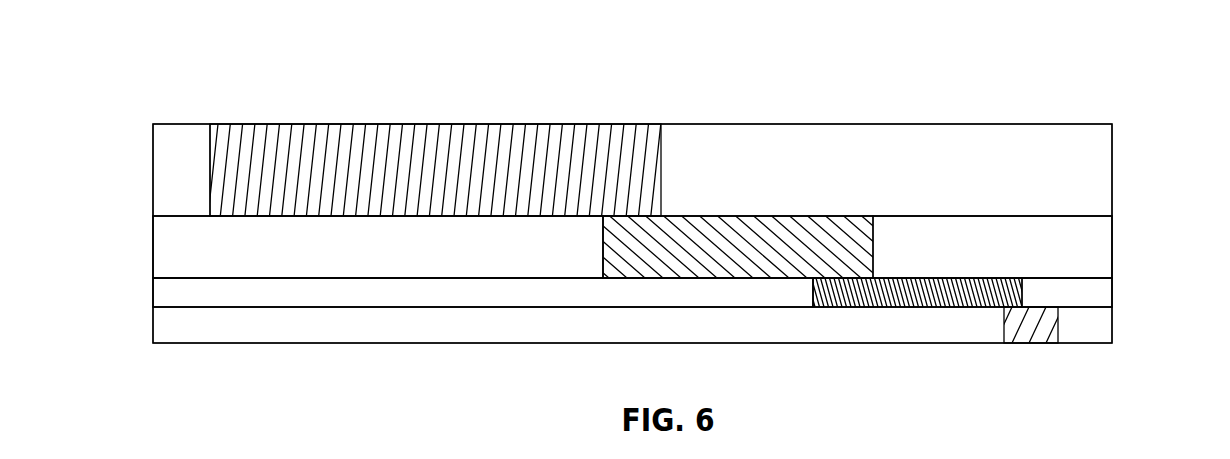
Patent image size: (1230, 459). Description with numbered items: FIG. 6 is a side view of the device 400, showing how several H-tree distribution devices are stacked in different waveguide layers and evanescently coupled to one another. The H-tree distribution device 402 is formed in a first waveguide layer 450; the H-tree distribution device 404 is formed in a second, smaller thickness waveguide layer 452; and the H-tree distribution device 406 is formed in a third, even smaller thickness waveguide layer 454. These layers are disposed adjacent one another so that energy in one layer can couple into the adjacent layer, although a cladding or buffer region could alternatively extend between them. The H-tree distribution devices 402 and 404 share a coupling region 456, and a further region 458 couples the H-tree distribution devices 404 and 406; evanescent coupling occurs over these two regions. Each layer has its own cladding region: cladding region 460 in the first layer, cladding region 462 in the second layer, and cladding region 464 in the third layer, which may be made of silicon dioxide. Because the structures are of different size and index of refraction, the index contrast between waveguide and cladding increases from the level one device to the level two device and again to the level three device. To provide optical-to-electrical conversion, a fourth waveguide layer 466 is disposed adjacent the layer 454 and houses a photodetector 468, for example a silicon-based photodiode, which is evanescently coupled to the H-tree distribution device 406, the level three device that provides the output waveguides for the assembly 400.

The device 400 is at (672, 97).
The H-tree distribution device 402 is at (282, 125).
The H-tree distribution device 404 is at (795, 213).
The H-tree distribution device 406 is at (960, 283).
The first waveguide layer 450 is at (1113, 147).
The second waveguide layer 452 is at (168, 245).
The third waveguide layer 454 is at (1102, 292).
The coupling region 456 is at (620, 216).
The coupling region 458 is at (838, 279).
The cladding region 460 is at (159, 178).
The cladding region 462 is at (263, 261).
The cladding region 464 is at (214, 305).
The fourth waveguide layer 466 is at (168, 323).
The photodetector 468 is at (1020, 343).